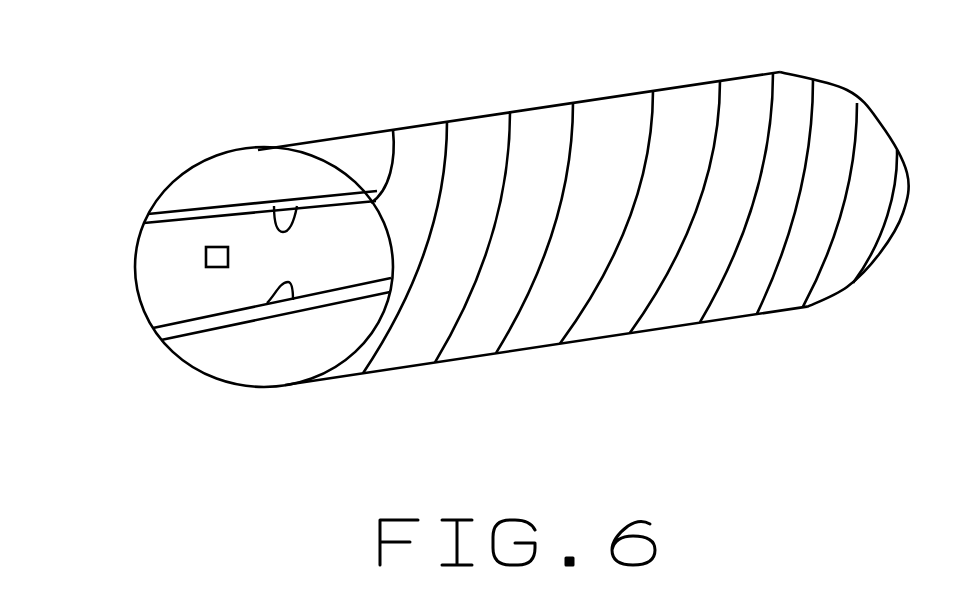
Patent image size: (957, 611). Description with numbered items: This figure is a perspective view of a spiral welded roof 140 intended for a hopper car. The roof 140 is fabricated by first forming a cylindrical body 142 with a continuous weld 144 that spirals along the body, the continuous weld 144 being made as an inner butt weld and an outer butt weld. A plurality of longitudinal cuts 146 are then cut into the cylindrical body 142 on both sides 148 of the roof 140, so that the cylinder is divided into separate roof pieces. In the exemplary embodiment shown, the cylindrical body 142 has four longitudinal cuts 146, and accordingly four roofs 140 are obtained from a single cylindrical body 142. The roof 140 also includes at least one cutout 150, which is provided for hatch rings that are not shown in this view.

The spiral welded roof 140 is at (141, 307).
The cylindrical body 142 is at (589, 342).
The continuous weld 144 is at (504, 190).
The longitudinal cuts 146 is at (124, 213).
The sides 148 is at (272, 232).
The cutout 150 is at (204, 257).